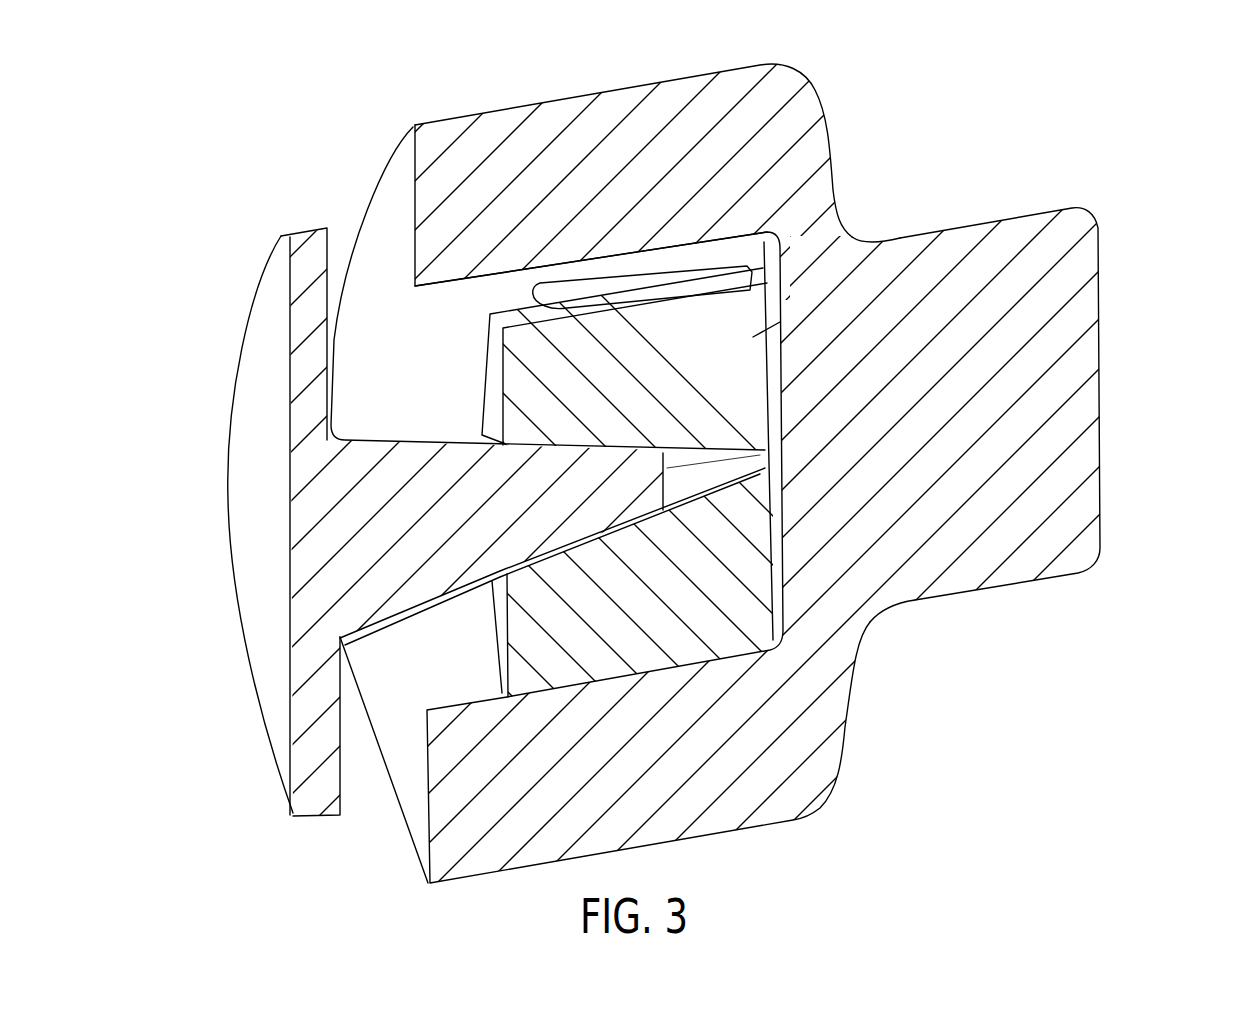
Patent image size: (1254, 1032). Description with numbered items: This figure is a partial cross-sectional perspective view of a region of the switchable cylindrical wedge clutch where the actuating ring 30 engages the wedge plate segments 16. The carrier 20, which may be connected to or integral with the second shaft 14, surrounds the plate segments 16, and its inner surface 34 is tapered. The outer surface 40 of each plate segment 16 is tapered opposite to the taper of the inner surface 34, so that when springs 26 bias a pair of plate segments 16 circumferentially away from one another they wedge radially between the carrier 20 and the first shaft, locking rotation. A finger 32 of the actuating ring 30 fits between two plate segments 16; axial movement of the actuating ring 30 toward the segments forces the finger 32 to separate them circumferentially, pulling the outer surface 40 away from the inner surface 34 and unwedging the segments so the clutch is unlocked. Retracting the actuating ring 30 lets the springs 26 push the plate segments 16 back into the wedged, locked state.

The second shaft 14 is at (1088, 360).
The plate segment 16 is at (858, 241).
The carrier 20 is at (781, 84).
The spring 26 is at (618, 298).
The actuating ring 30 is at (252, 513).
The finger 32 is at (410, 460).
The inner surface 34 is at (422, 323).
The outer surface 40 is at (479, 342).